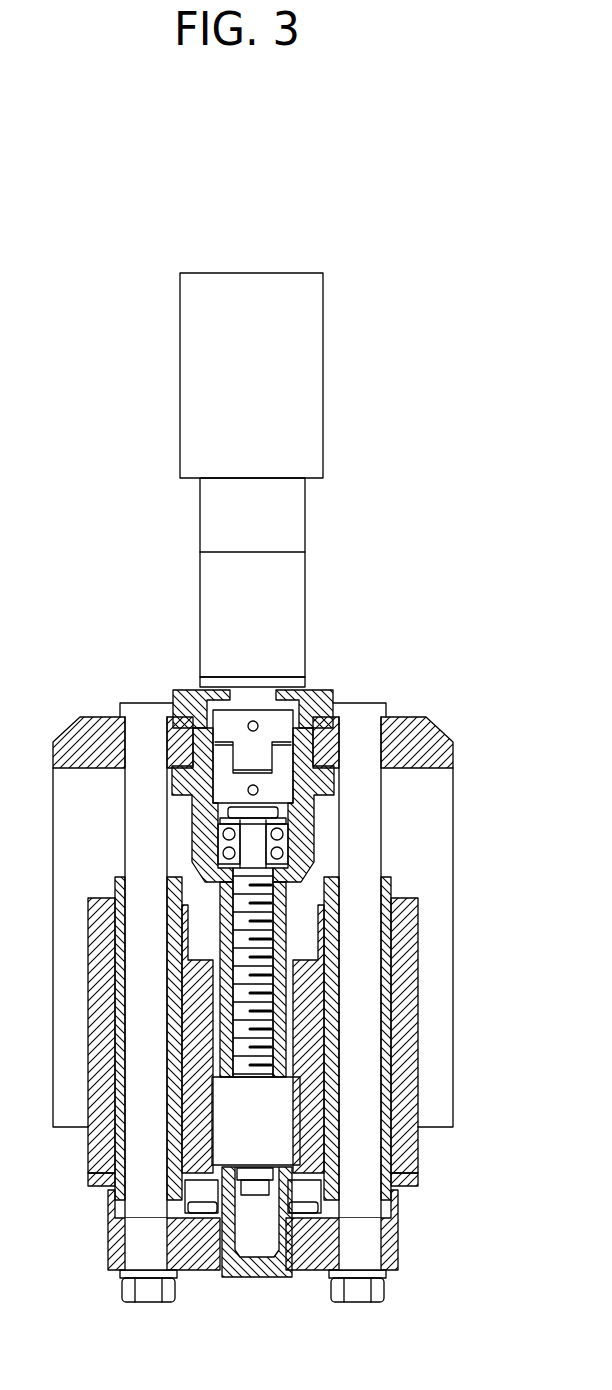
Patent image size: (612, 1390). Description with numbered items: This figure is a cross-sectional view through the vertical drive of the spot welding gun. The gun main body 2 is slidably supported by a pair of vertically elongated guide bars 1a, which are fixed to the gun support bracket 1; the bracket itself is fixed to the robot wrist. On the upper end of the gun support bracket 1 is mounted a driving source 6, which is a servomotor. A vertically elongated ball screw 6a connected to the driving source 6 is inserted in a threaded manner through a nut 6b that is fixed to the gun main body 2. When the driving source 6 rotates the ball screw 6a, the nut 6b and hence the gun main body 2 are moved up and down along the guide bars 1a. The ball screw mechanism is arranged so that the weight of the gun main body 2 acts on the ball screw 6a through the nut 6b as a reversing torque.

The gun support bracket 1 is at (432, 816).
The guide bars 1a is at (142, 833).
The gun main body 2 is at (413, 1083).
The driving source 6 is at (308, 398).
The ball screw 6a is at (272, 1017).
The nut 6b is at (248, 1157).